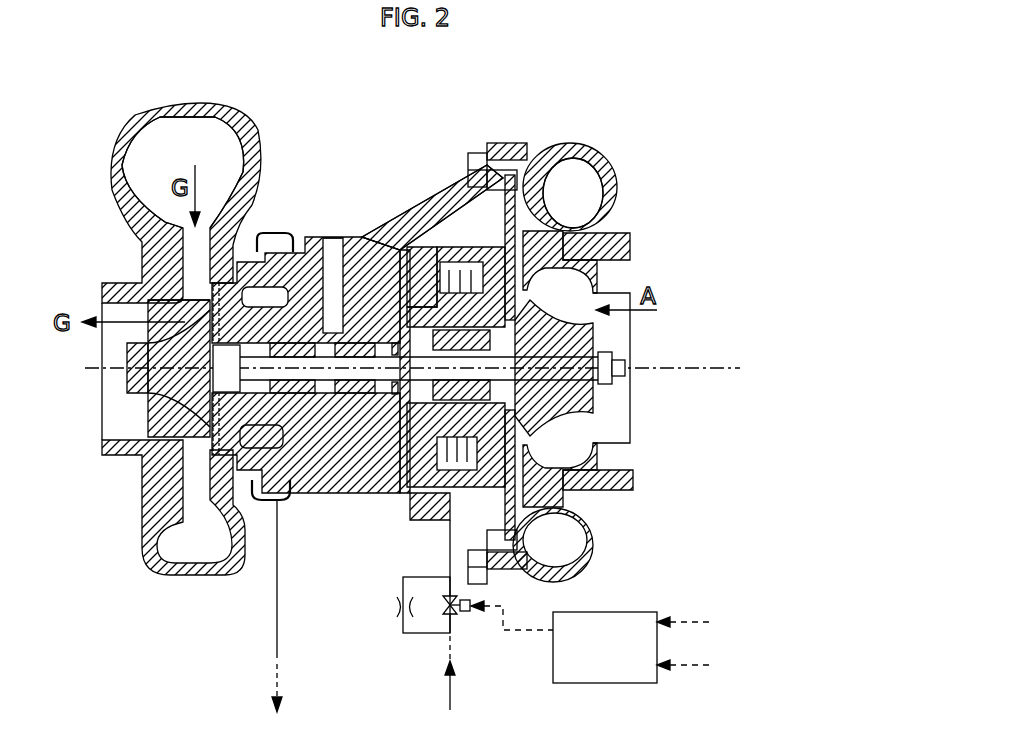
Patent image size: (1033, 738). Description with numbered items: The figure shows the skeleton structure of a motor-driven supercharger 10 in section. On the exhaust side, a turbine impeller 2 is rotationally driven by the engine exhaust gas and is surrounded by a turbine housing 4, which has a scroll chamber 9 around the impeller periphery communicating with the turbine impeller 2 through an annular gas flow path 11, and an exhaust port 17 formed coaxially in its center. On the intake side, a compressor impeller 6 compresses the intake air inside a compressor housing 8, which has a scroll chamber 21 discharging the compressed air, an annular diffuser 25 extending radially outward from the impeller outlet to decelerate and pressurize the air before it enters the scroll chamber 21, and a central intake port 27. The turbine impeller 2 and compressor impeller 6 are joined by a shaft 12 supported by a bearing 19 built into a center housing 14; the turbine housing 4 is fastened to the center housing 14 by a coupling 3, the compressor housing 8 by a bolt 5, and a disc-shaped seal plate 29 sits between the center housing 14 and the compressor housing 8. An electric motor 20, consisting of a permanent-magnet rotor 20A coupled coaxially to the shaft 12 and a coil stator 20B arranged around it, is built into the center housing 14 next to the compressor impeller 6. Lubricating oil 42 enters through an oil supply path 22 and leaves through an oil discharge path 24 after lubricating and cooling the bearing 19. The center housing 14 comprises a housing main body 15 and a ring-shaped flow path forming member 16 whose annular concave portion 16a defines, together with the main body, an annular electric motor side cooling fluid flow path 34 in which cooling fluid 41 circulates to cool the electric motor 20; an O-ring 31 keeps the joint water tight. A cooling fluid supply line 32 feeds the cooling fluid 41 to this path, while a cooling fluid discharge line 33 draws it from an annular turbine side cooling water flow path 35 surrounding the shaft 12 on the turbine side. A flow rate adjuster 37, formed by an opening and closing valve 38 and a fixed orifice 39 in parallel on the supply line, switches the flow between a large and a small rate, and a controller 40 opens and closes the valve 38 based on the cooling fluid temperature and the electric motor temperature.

The motor-driven supercharger 10 is at (373, 119).
The turbine impeller 2 is at (135, 348).
The coupling 3 is at (268, 233).
The turbine housing 4 is at (145, 235).
The bolt 5 is at (485, 343).
The compressor impeller 6 is at (558, 342).
The compressor housing 8 is at (519, 362).
The scroll chamber 9 is at (152, 155).
The annular gas flow path 11 is at (185, 268).
The shaft 12 is at (315, 382).
The center housing 14 is at (373, 153).
The housing main body 15 is at (380, 250).
The flow path forming member 16 is at (406, 247).
The annular concave portion 16a is at (470, 243).
The exhaust port 17 is at (112, 423).
The bearing 19 is at (362, 398).
The electric motor 20 is at (565, 367).
The rotor 20A is at (495, 392).
The stator 20B is at (500, 427).
The scroll chamber 21 is at (565, 205).
The oil supply path 22 is at (335, 290).
The oil discharge path 24 is at (351, 522).
The annular diffuser 25 is at (590, 235).
The intake port 27 is at (625, 362).
The seal plate 29 is at (520, 230).
The O-ring 31 is at (545, 545).
The cooling fluid supply line 32 is at (455, 640).
The cooling fluid discharge line 33 is at (273, 605).
The electric motor side cooling fluid flow path 34 is at (474, 153).
The turbine side cooling water flow path 35 is at (292, 283).
The flow rate adjuster 37 is at (434, 622).
The opening and closing valve 38 is at (447, 611).
The fixed orifice 39 is at (396, 606).
The controller 40 is at (592, 660).
The cooling fluid 41 is at (350, 686).
The lubricating oil 42 is at (333, 228).